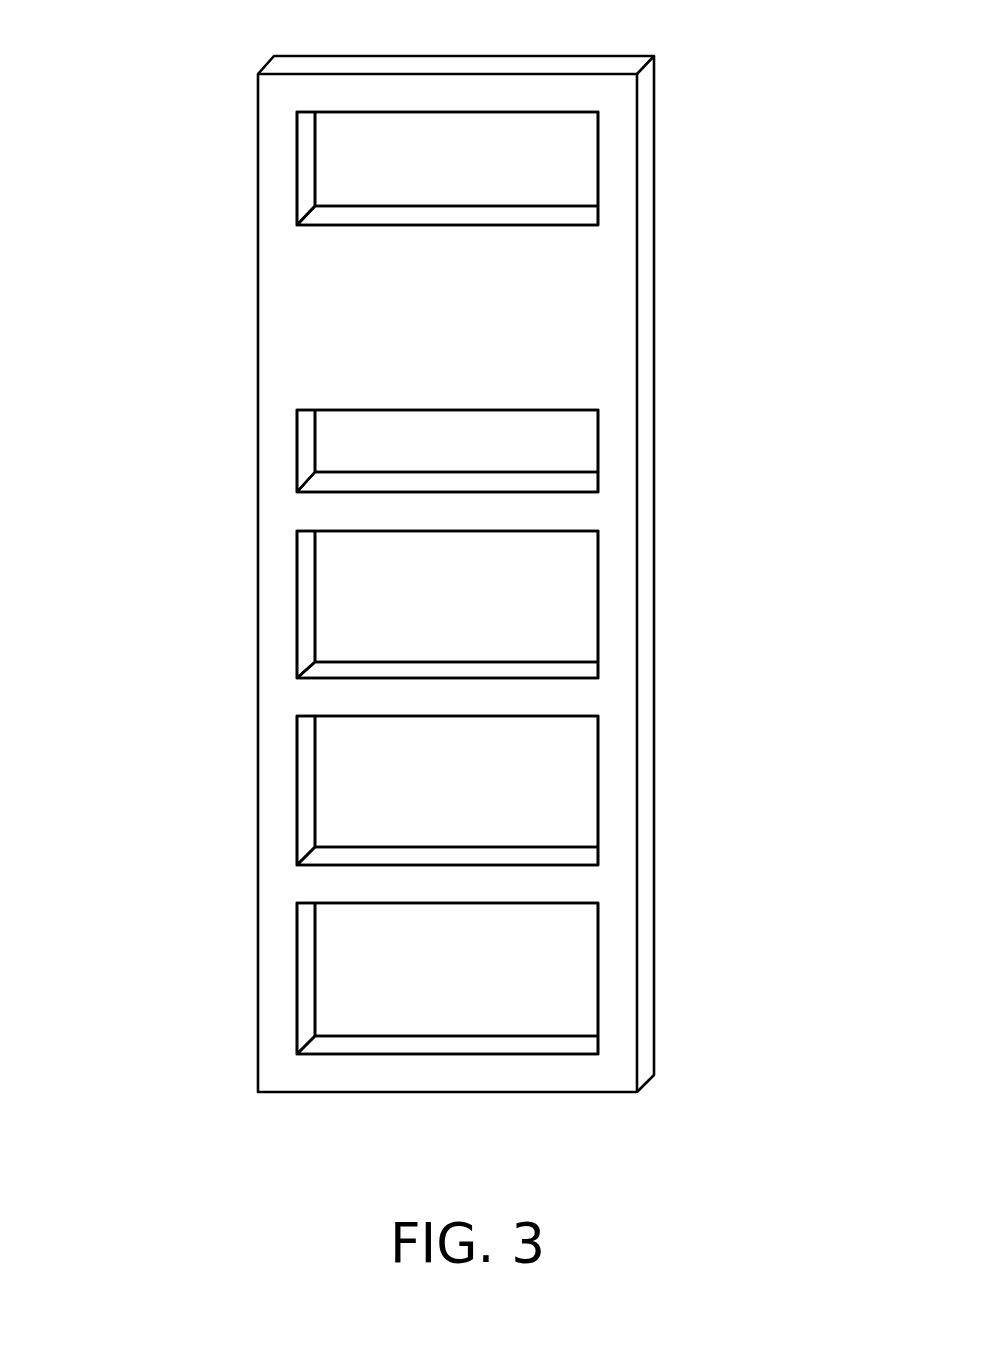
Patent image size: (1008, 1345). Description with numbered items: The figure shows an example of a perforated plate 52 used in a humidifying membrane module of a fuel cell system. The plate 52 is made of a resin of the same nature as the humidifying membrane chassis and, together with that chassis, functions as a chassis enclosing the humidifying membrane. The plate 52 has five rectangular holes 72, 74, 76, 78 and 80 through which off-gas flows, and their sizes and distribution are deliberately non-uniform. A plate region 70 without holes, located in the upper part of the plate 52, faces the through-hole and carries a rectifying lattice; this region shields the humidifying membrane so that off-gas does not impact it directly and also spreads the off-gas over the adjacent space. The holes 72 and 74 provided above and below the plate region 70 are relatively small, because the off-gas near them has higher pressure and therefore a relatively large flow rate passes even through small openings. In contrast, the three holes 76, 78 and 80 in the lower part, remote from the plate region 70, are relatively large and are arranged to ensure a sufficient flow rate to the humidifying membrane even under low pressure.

The plate 52 is at (257, 138).
The plate region 70 is at (306, 300).
The hole 72 is at (580, 155).
The hole 74 is at (580, 440).
The hole 76 is at (580, 592).
The hole 78 is at (580, 789).
The hole 80 is at (580, 965).